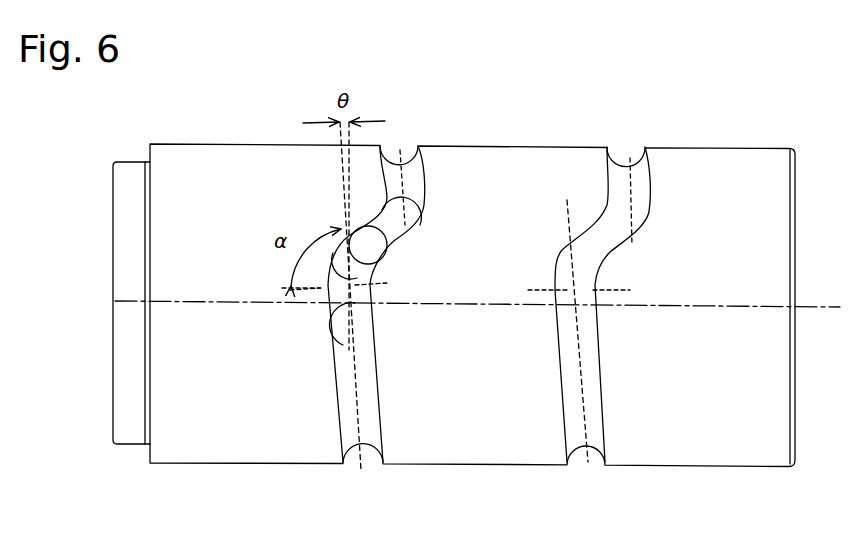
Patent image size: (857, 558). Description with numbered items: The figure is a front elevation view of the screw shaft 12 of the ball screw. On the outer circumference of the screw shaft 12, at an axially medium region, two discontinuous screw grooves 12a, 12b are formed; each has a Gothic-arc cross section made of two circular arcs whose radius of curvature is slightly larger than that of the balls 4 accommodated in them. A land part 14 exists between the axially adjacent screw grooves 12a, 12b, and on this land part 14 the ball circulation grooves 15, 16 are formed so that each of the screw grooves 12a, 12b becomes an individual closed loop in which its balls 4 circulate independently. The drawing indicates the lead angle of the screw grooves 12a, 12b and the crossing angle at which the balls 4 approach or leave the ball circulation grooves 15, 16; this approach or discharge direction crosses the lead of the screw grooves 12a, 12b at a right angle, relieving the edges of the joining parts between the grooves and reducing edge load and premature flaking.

The ball 4 is at (376, 343).
The screw shaft 12 is at (488, 144).
The screw groove 12a is at (405, 164).
The screw groove 12b is at (627, 164).
The land part 14 is at (482, 422).
The ball circulation groove 15 is at (404, 246).
The ball circulation groove 16 is at (612, 238).